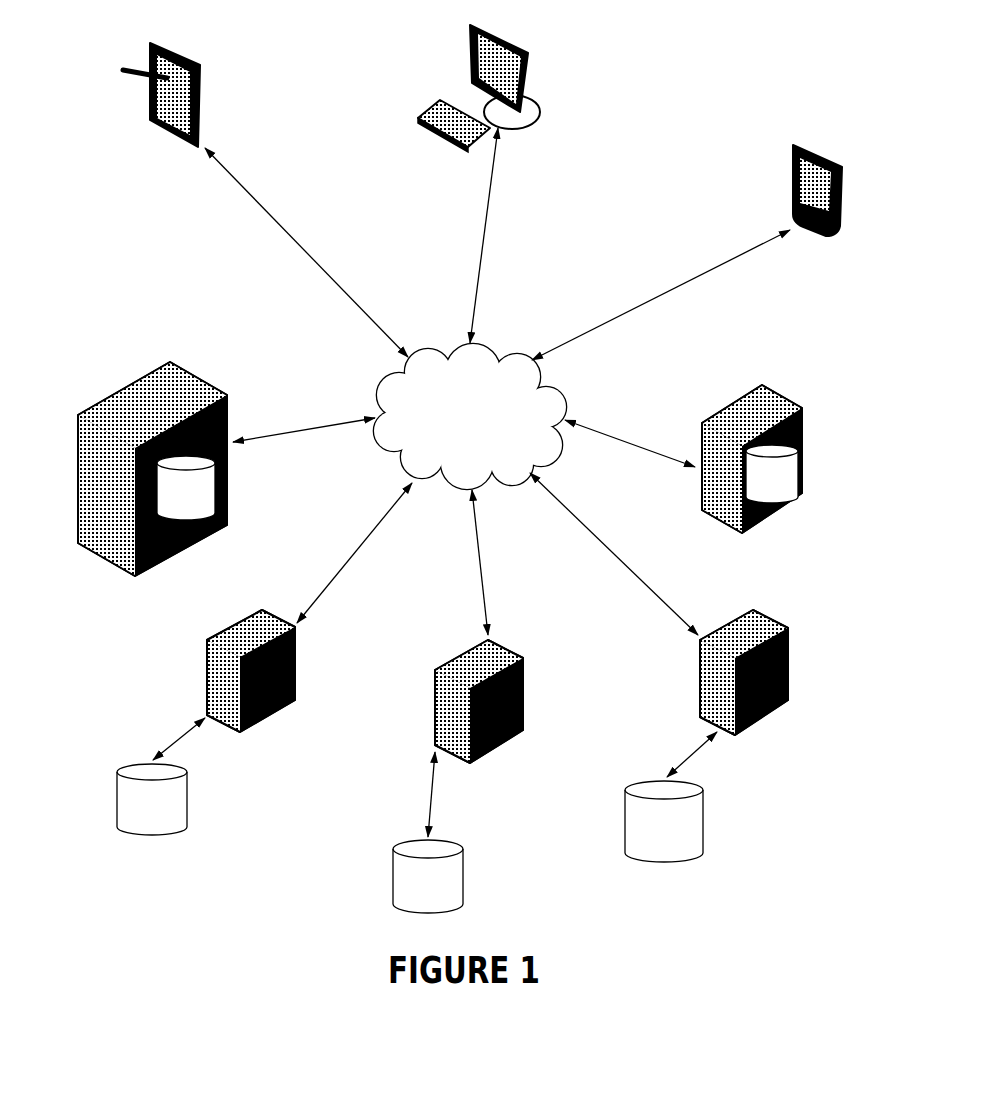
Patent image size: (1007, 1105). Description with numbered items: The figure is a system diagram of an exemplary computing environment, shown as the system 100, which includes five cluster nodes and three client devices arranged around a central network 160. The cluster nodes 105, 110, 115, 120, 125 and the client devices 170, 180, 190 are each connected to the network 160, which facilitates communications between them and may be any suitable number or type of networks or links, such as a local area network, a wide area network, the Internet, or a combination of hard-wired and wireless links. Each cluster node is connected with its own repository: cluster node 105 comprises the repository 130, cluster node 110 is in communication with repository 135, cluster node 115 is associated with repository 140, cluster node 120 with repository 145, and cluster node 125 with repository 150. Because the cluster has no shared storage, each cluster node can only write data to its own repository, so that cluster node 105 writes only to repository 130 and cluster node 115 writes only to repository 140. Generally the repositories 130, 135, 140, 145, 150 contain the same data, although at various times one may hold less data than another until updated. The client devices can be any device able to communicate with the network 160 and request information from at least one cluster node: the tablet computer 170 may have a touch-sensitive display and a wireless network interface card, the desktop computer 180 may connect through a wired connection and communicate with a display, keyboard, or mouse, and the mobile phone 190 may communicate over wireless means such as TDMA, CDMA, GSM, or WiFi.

The system 100 is at (718, 25).
The cluster node 105 is at (152, 483).
The cluster node 110 is at (251, 687).
The cluster node 115 is at (479, 717).
The cluster node 120 is at (744, 687).
The cluster node 125 is at (752, 474).
The repository 130 is at (186, 488).
The repository 135 is at (152, 799).
The repository 140 is at (428, 876).
The repository 145 is at (664, 821).
The repository 150 is at (772, 474).
The network 160 is at (470, 416).
The tablet computer 170 is at (161, 110).
The desktop computer 180 is at (479, 107).
The mobile phone 190 is at (817, 206).